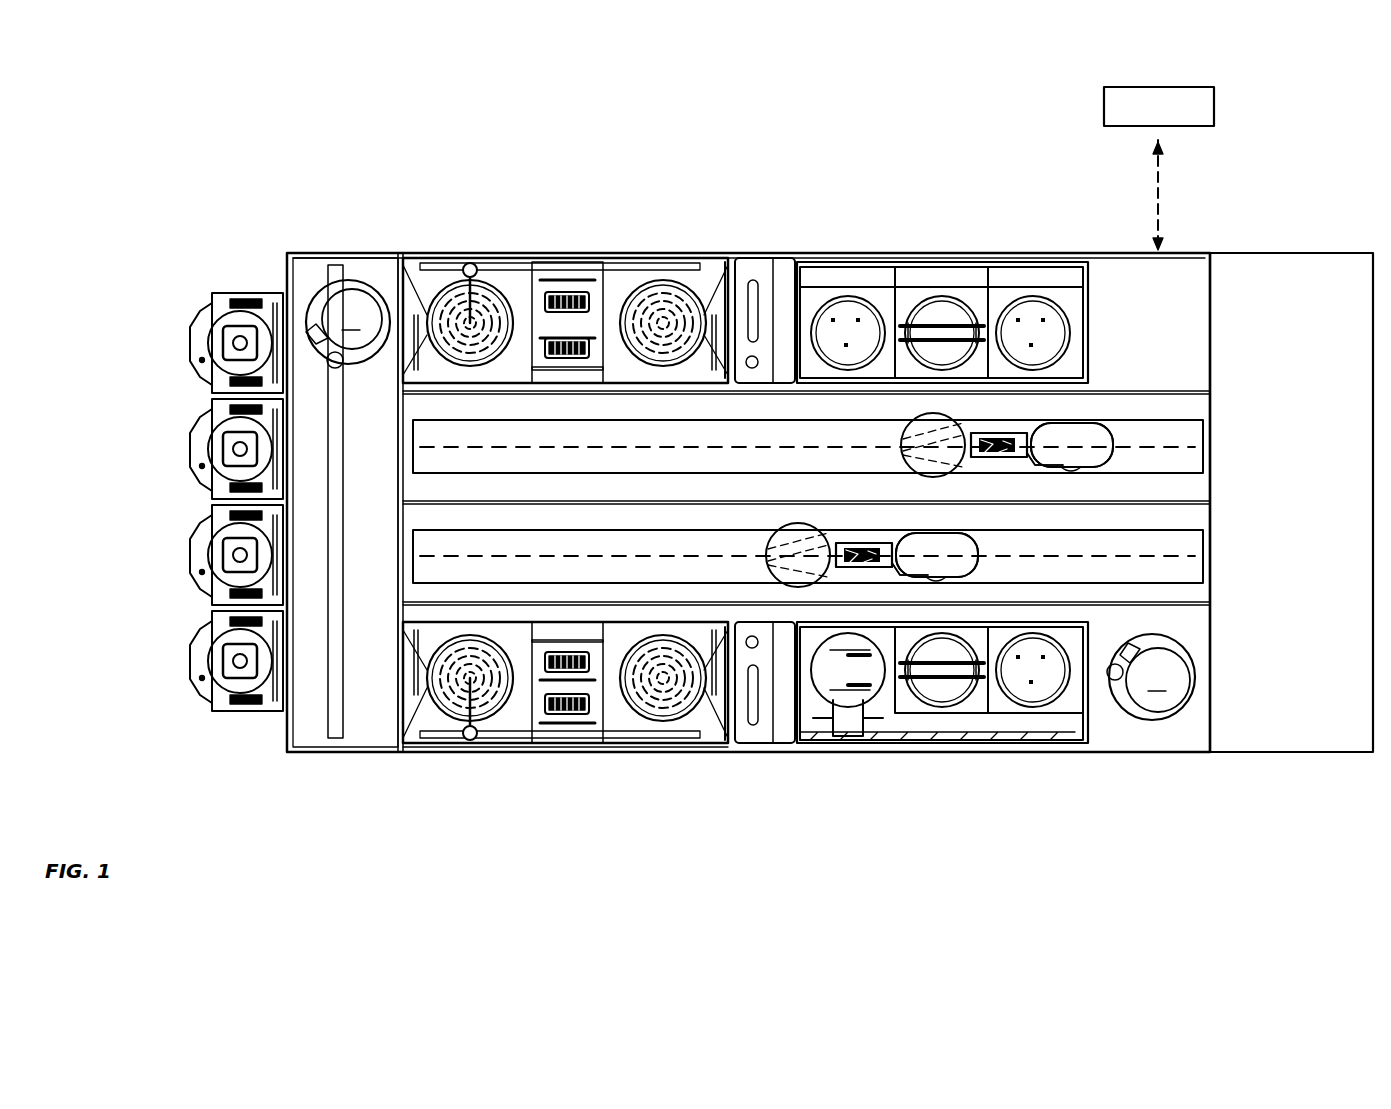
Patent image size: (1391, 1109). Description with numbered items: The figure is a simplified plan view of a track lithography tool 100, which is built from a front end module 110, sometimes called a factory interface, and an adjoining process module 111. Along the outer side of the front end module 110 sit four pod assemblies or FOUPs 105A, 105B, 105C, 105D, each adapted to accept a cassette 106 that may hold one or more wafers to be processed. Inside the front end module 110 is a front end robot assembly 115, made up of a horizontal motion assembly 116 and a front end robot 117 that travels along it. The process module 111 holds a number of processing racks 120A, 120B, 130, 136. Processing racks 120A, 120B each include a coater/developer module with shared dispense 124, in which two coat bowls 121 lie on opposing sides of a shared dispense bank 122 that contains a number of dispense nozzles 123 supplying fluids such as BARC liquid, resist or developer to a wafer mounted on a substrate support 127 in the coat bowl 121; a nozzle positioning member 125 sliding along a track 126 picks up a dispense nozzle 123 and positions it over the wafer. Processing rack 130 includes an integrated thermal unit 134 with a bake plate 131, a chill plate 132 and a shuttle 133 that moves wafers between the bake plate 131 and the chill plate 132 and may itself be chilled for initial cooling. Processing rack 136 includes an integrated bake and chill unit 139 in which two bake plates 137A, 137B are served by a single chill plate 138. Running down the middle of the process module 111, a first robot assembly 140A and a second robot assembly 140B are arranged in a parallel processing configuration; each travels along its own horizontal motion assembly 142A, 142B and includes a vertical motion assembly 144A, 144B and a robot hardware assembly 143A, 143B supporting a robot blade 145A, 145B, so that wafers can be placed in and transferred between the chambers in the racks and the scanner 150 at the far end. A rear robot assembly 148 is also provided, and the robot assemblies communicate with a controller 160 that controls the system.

The electronic system 100 is at (765, 87).
The pod assembly 105A is at (212, 319).
The pod assembly 105B is at (212, 425).
The pod assembly 105C is at (212, 531).
The pod assembly 105D is at (212, 637).
The cassette 106 is at (207, 341).
The front end module 110 is at (310, 782).
The process module 111 is at (722, 836).
The front end robot assembly 115 is at (305, 260).
The horizontal motion assembly 116 is at (330, 717).
The front end robot 117 is at (385, 280).
The processing rack 120A is at (577, 212).
The processing rack 120B is at (520, 805).
The coat bowl 121 is at (479, 376).
The shared dispense bank 122 is at (574, 379).
The dispense nozzle 123 is at (530, 284).
The coater/developer module with shared dispense 124 is at (718, 260).
The nozzle positioning member 125 is at (467, 710).
The track 126 is at (557, 746).
The substrate support 127 is at (440, 284).
The processing rack 130 is at (933, 778).
The bake plate 131 is at (1067, 749).
The chill plate 132 is at (979, 750).
The shuttle 133 is at (803, 750).
The integrated thermal unit 134 is at (1108, 752).
The processing rack 136 is at (935, 216).
The bake plate 137A is at (824, 300).
The bake plate 137B is at (1044, 302).
The chill plate 138 is at (946, 302).
The integrated bake and chill unit 139 is at (1086, 276).
The first robot assembly 140A is at (1104, 472).
The second robot assembly 140B is at (976, 582).
The horizontal motion assembly 142A is at (1204, 430).
The horizontal motion assembly 142B is at (1204, 568).
The robot hardware assembly 143A is at (1020, 425).
The robot hardware assembly 143B is at (898, 528).
The vertical motion assembly 144A is at (1110, 442).
The vertical motion assembly 144B is at (980, 554).
The robot blade 145A is at (905, 450).
The robot blade 145B is at (766, 561).
The rear robot assembly 148 is at (1170, 752).
The scanner 150 is at (1341, 251).
The controller 160 is at (1210, 84).